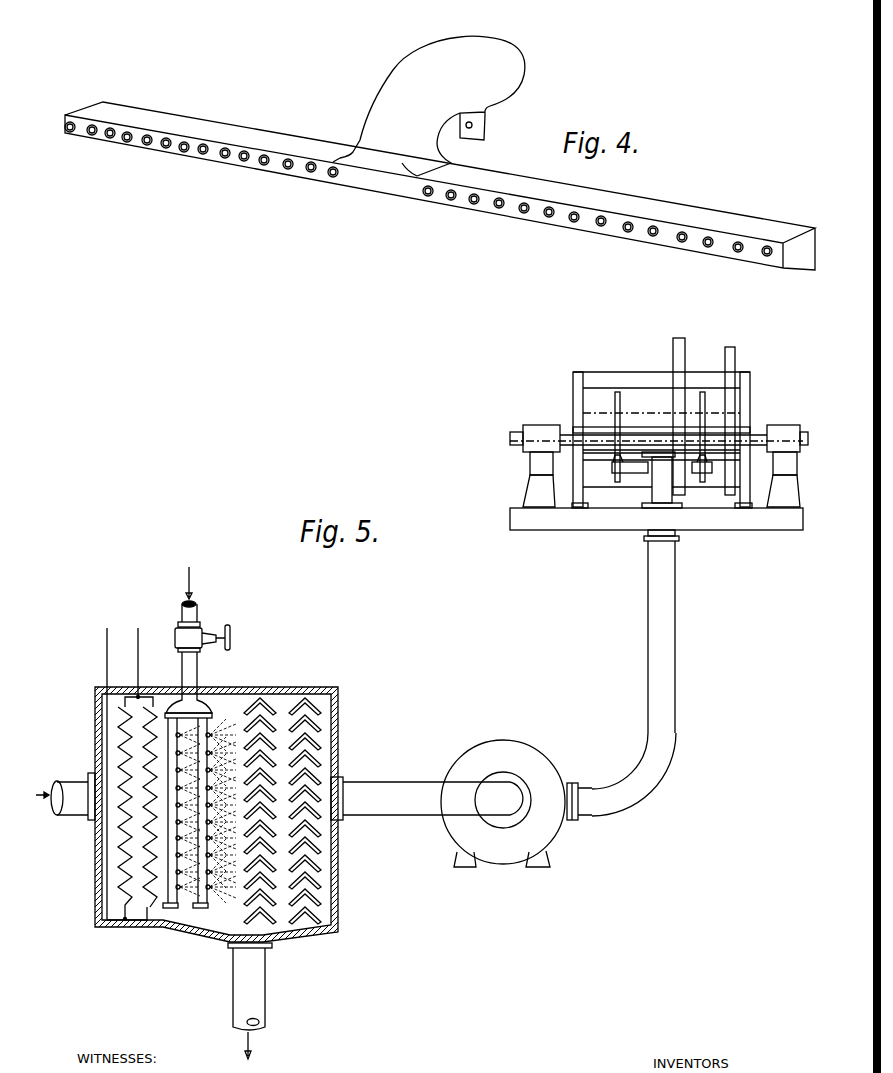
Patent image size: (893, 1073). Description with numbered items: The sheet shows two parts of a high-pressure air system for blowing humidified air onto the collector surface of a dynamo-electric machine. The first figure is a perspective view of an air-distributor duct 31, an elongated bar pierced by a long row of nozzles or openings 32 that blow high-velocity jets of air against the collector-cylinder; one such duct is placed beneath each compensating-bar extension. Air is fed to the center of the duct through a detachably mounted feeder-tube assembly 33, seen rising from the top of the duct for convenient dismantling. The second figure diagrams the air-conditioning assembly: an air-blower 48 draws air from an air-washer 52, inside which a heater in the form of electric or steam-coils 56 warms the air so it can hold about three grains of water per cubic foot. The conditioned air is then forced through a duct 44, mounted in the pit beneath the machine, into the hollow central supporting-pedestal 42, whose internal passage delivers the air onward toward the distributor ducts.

In FIG. 4, the air-distributor duct 31 is at (693, 207).
In FIG. 4, the nozzles or openings 32 is at (681, 243).
In FIG. 4, the feeder-tube assembly 33 is at (524, 62).
In FIG. 5, the central supporting-pedestal 42 is at (628, 528).
In FIG. 5, the duct 44 is at (673, 570).
In FIG. 5, the air-blower 48 is at (532, 729).
In FIG. 5, the air-washer 52 is at (322, 679).
In FIG. 5, the heater in the form of electric or steam-coils 56 is at (133, 677).